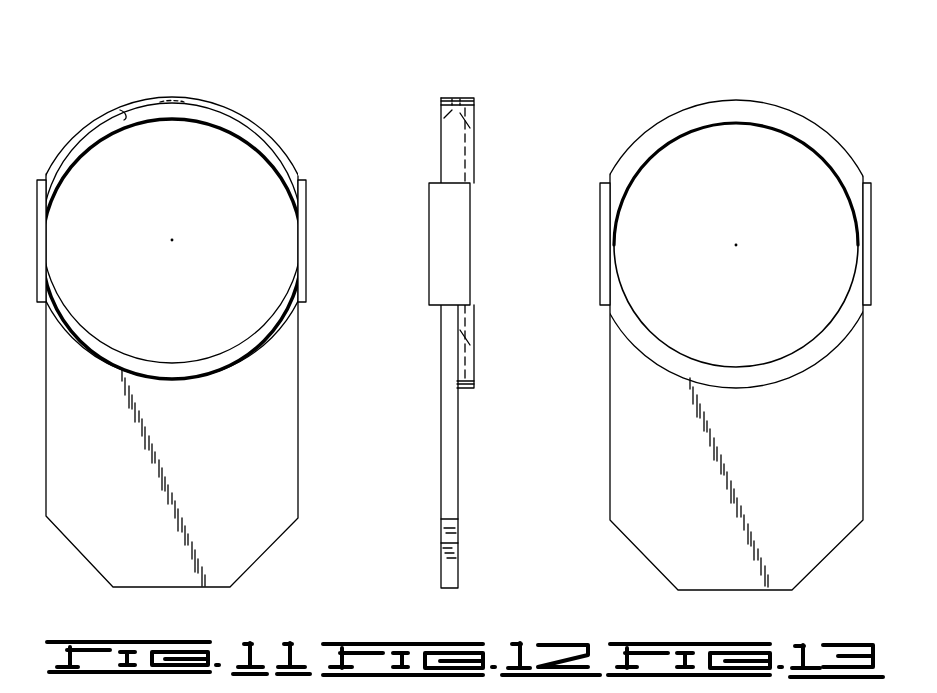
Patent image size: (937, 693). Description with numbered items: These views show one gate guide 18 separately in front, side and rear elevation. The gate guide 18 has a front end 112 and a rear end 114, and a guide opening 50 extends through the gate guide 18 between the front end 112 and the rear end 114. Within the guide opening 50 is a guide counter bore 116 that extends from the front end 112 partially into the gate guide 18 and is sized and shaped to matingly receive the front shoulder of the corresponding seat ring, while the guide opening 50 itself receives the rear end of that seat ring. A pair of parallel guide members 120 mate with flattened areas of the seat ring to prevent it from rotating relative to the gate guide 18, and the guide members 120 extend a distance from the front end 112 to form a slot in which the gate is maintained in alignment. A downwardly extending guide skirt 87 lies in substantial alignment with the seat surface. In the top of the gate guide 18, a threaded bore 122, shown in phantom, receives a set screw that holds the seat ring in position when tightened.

In FIG. 11, the gate guide 18 is at (201, 84).
In FIG. 12, the gate guide 18 is at (458, 84).
In FIG. 13, the gate guide 18 is at (740, 92).
In FIG. 11, the guide opening 50 is at (189, 268).
In FIG. 12, the guide opening 50 is at (474, 135).
In FIG. 13, the guide opening 50 is at (713, 261).
In FIG. 11, the guide skirt 87 is at (82, 556).
In FIG. 12, the guide skirt 87 is at (460, 589).
In FIG. 13, the guide skirt 87 is at (608, 430).
In FIG. 11, the front end 112 is at (251, 126).
In FIG. 12, the front end 112 is at (442, 101).
In FIG. 12, the rear end 114 is at (474, 118).
In FIG. 13, the rear end 114 is at (784, 125).
In FIG. 11, the guide counter bore 116 is at (124, 116).
In FIG. 12, the guide counter bore 116 is at (460, 118).
In FIG. 11, the guide members 120 is at (40, 200).
In FIG. 12, the guide members 120 is at (440, 258).
In FIG. 13, the guide members 120 is at (868, 212).
In FIG. 11, the threaded bore 122 is at (172, 96).
In FIG. 12, the threaded bore 122 is at (456, 98).